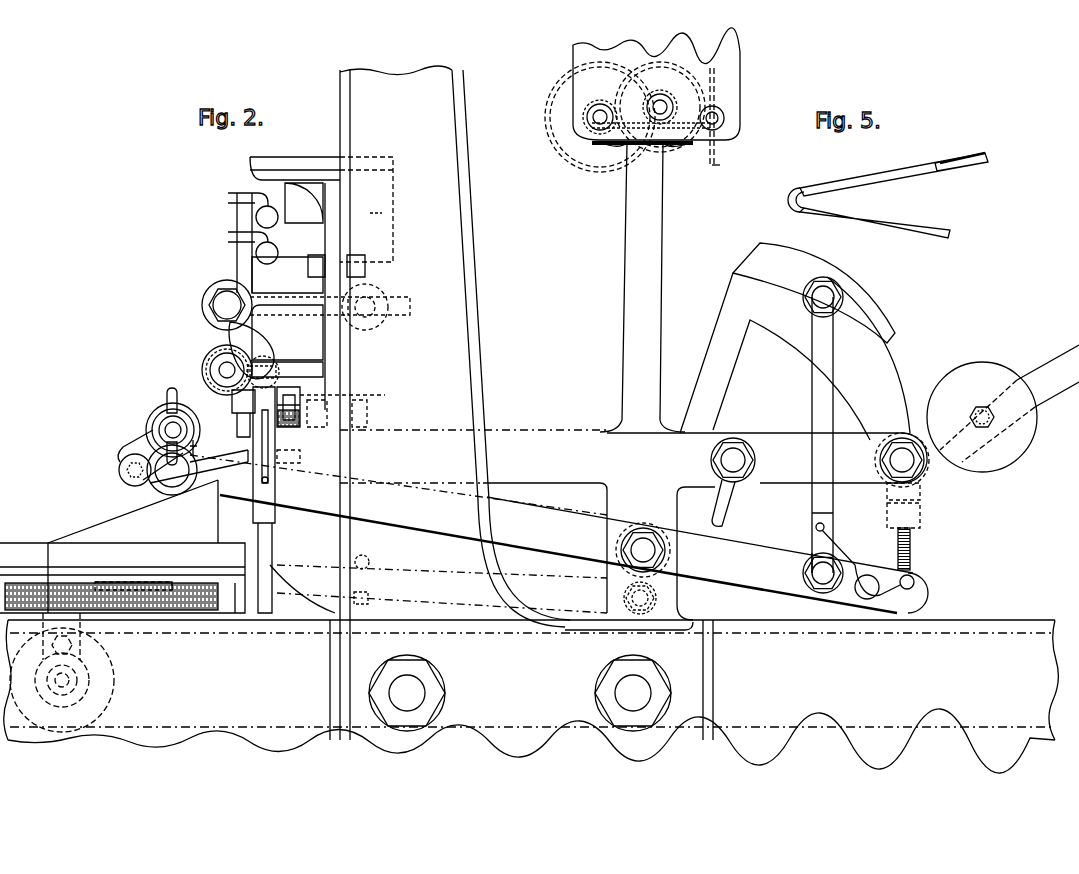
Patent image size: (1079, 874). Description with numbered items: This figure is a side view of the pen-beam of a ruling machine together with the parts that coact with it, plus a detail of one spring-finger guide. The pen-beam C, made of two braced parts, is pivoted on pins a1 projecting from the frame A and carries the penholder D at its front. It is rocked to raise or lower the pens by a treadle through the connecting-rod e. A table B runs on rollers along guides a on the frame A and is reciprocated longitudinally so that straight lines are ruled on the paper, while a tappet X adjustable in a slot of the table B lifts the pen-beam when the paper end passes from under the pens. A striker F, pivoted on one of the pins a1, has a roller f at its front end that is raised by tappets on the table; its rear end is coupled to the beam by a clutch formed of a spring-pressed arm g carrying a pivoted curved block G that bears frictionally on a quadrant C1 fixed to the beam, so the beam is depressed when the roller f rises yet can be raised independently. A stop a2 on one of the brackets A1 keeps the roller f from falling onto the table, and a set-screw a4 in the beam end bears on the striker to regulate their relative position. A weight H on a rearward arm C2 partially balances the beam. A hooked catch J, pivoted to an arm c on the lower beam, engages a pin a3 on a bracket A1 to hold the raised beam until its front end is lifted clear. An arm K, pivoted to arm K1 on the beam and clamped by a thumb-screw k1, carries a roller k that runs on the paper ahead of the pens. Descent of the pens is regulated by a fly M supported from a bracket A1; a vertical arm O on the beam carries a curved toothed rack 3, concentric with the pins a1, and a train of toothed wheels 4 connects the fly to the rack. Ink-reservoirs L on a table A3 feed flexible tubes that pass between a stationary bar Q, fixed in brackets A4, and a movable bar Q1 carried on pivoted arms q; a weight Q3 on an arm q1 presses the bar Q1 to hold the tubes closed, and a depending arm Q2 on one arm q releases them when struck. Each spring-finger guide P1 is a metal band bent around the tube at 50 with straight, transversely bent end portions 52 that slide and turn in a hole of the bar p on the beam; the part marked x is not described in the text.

In FIG. 2, the frame A is at (531, 696).
In FIG. 2, the guides a is at (1032, 735).
In FIG. 2, the brackets A1 is at (455, 346).
In FIG. 2, the table A3 is at (312, 168).
In FIG. 2, the brackets A4 is at (298, 342).
In FIG. 2, the table B is at (40, 568).
In FIG. 2, the tappet X is at (151, 523).
In FIG. 2, the table support x is at (148, 620).
In FIG. 2, the ink-reservoirs L is at (347, 204).
In FIG. 2, the spring-finger guide P1 is at (236, 402).
In FIG. 5, the spring-finger guide P1 is at (876, 214).
In FIG. 2, the bar p is at (290, 388).
In FIG. 2, the stationary bar Q is at (220, 366).
In FIG. 2, the movable bar Q1 is at (253, 350).
In FIG. 2, the depending arm Q2 is at (266, 556).
In FIG. 2, the weight Q3 is at (378, 300).
In FIG. 2, the arms q is at (250, 362).
In FIG. 2, the arm q1 is at (412, 308).
In FIG. 2, the arm K is at (142, 441).
In FIG. 2, the arm K1 is at (188, 424).
In FIG. 2, the roller k is at (120, 474).
In FIG. 2, the thumb-screw k1 is at (165, 404).
In FIG. 2, the roller f is at (196, 443).
In FIG. 2, the penholder D is at (266, 457).
In FIG. 2, the hooked catch J is at (410, 589).
In FIG. 2, the pen-beam C is at (705, 526).
In FIG. 2, the quadrant C1 is at (861, 425).
In FIG. 2, the arm C2 is at (1009, 403).
In FIG. 2, the arm c is at (612, 575).
In FIG. 2, the striker F is at (540, 529).
In FIG. 2, the pins a1 is at (668, 550).
In FIG. 2, the stop a2 is at (370, 562).
In FIG. 2, the pin a3 is at (362, 598).
In FIG. 2, the set-screw a4 is at (897, 548).
In FIG. 2, the vertical arm O is at (645, 287).
In FIG. 2, the bar N is at (592, 143).
In FIG. 2, the fly M is at (722, 116).
In FIG. 2, the toothed rack 3 is at (585, 160).
In FIG. 2, the train of toothed wheels 4 is at (592, 153).
In FIG. 2, the curved block G is at (814, 293).
In FIG. 2, the spring-pressed arm g is at (815, 424).
In FIG. 2, the connecting-rod e is at (735, 520).
In FIG. 2, the weight H is at (982, 417).
In FIG. 5, the bent portion 50 is at (786, 200).
In FIG. 5, the end portions 52 is at (912, 233).